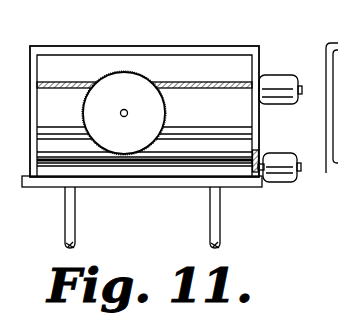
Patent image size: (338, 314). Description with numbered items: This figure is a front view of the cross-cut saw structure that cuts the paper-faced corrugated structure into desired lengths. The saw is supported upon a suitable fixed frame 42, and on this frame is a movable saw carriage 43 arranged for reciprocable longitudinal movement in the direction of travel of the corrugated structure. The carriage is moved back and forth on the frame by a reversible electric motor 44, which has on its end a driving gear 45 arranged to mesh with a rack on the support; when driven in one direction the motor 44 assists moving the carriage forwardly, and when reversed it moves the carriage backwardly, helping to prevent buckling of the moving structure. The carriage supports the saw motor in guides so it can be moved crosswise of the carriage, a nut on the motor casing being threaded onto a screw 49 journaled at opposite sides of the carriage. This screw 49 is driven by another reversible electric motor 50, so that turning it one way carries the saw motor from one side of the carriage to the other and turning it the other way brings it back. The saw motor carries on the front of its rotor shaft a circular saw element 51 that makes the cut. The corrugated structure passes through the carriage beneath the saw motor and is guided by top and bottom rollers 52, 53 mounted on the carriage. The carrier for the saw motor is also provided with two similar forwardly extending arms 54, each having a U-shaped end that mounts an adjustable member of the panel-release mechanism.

The fixed frame 42 is at (255, 187).
The saw carriage 43 is at (200, 53).
The electric motor 44 is at (289, 179).
The driving gear 45 is at (263, 154).
The screw 49 is at (187, 86).
The electric motor 50 is at (276, 81).
The circular saw element 51 is at (125, 83).
The top roller 52 is at (205, 123).
The bottom roller 53 is at (176, 164).
The forwardly extending arms 54 is at (209, 245).